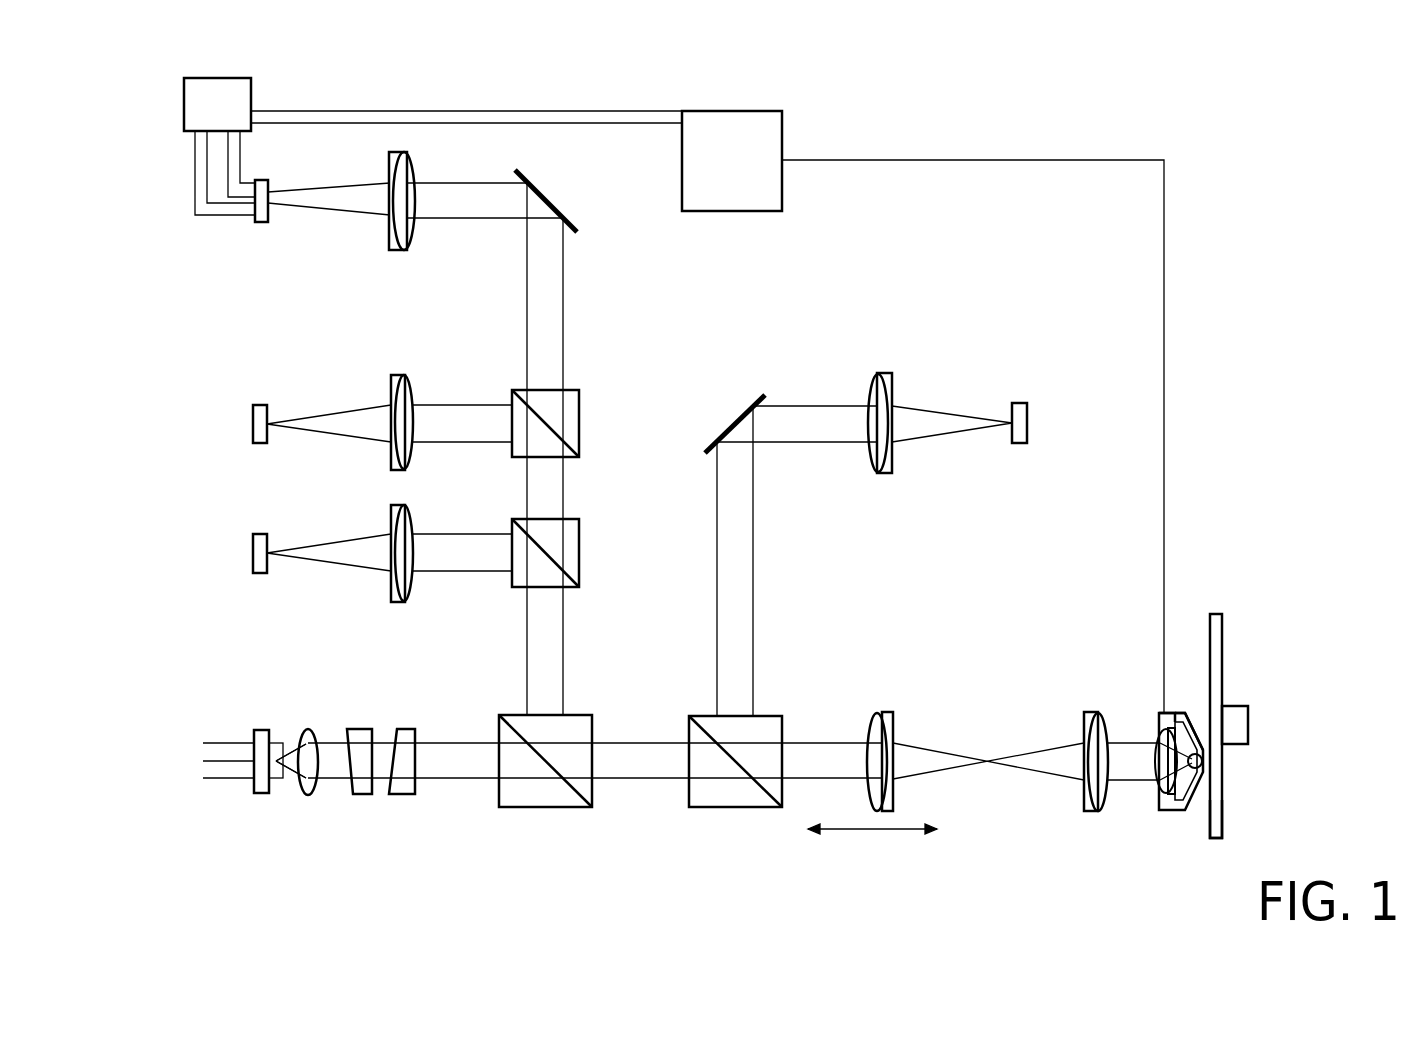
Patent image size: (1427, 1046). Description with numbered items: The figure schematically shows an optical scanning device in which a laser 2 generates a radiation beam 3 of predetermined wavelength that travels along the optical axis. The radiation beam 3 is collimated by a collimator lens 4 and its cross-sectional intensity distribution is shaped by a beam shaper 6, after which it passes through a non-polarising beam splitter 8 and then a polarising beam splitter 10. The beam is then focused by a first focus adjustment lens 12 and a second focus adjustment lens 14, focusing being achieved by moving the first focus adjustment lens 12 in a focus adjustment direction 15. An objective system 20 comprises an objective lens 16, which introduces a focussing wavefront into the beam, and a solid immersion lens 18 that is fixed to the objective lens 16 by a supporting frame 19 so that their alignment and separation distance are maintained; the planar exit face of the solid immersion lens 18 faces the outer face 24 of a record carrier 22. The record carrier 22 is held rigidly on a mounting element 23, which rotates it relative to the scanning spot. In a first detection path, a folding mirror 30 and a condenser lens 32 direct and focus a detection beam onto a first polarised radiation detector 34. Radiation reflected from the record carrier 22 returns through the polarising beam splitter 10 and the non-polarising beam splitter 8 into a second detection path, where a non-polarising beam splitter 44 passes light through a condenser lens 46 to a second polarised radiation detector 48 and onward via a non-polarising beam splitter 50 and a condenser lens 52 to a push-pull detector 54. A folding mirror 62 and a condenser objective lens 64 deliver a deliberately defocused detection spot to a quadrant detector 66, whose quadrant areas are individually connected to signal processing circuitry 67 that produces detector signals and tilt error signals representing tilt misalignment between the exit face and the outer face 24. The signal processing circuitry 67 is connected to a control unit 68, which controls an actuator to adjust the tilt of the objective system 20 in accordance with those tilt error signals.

The laser 2 is at (257, 728).
The radiation beam 3 is at (291, 773).
The collimator lens 4 is at (310, 728).
The beam shaper 6 is at (400, 728).
The non-polarising beam splitter 8 is at (521, 808).
The polarising beam splitter 10 is at (710, 808).
The first focus adjustment lens 12 is at (886, 712).
The second focus adjustment lens 14 is at (1083, 724).
The focus adjustment direction 15 is at (873, 832).
The objective lens 16 is at (1166, 796).
The solid immersion lens 18 is at (1160, 760).
The supporting frame 19 is at (1165, 712).
The objective system 20 is at (1178, 712).
The record carrier 22 is at (1222, 692).
The mounting element 23 is at (1248, 722).
The outer face 24 is at (1222, 812).
The folding mirror 30 is at (730, 420).
The condenser lens 32 is at (883, 372).
The first polarised radiation detector 34 is at (1018, 402).
The non-polarising beam splitter 44 is at (579, 555).
The condenser lens 46 is at (391, 518).
The second polarised radiation detector 48 is at (258, 532).
The non-polarising beam splitter 50 is at (579, 425).
The condenser lens 52 is at (391, 390).
The push-pull detector 54 is at (258, 403).
The folding mirror 62 is at (550, 198).
The condenser objective lens 64 is at (388, 241).
The quadrant detector 66 is at (268, 222).
The signal processing circuitry 67 is at (184, 92).
The control unit 68 is at (731, 213).